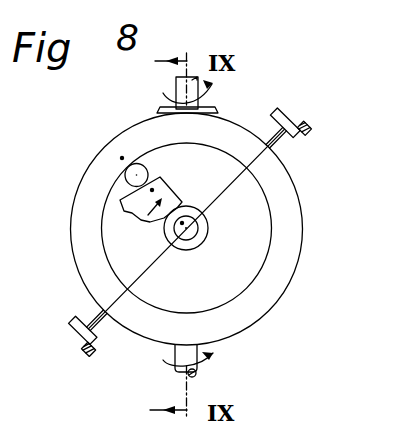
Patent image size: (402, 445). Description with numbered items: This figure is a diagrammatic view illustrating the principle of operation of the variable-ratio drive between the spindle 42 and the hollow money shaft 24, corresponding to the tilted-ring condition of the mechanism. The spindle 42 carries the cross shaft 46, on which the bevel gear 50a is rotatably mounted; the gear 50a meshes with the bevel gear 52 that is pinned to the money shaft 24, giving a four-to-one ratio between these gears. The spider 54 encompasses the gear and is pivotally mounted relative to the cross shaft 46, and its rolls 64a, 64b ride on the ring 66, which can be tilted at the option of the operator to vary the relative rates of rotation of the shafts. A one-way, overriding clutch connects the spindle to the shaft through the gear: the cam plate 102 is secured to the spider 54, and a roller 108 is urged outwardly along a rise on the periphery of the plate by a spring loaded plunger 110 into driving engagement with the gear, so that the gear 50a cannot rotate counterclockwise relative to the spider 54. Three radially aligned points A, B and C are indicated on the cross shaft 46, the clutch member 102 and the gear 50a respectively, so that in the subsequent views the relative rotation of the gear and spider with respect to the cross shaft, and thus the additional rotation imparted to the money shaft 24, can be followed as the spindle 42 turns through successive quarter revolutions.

The money shaft 24 is at (176, 87).
The spindle 42 is at (200, 372).
The cross shaft 46 is at (208, 233).
The bevel gear 50a is at (300, 229).
The bevel gear 52 is at (218, 108).
The spider 54 is at (190, 250).
The roll 64a is at (74, 321).
The roll 64b is at (285, 113).
The ring 66 is at (93, 350).
The cam plate 102 is at (180, 198).
The roller 108 is at (146, 166).
The spring loaded plunger 110 is at (218, 150).
The point A is at (168, 237).
The point B is at (158, 188).
The point C is at (121, 158).